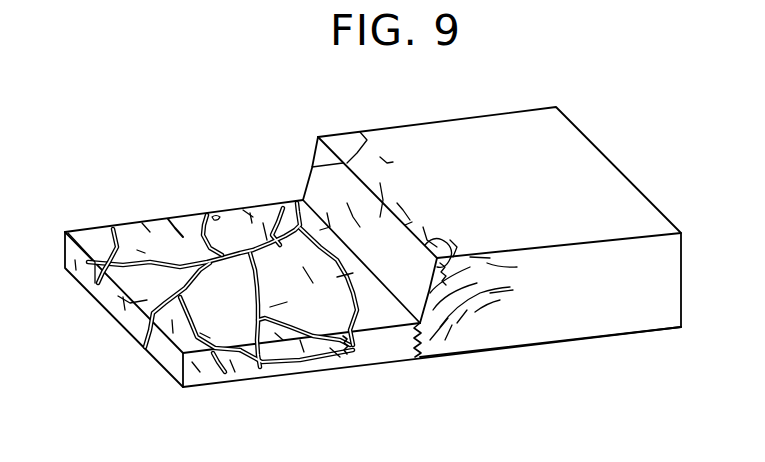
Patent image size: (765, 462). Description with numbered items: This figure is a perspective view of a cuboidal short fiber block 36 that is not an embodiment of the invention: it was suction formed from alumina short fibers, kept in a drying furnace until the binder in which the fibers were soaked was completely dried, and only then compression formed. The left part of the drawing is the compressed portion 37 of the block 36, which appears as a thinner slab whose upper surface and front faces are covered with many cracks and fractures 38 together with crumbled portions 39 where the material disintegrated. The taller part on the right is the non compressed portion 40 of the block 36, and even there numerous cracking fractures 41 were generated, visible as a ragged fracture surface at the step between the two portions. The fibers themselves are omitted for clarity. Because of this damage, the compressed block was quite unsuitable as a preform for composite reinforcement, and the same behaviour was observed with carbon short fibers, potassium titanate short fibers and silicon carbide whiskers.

The short fiber block 36 is at (487, 113).
The compressed portion 37 is at (424, 365).
The cracks and fractures 38 is at (110, 226).
The crumbled portions 39 is at (218, 214).
The non compressed portion 40 is at (681, 337).
The cracking fractures 41 is at (490, 272).